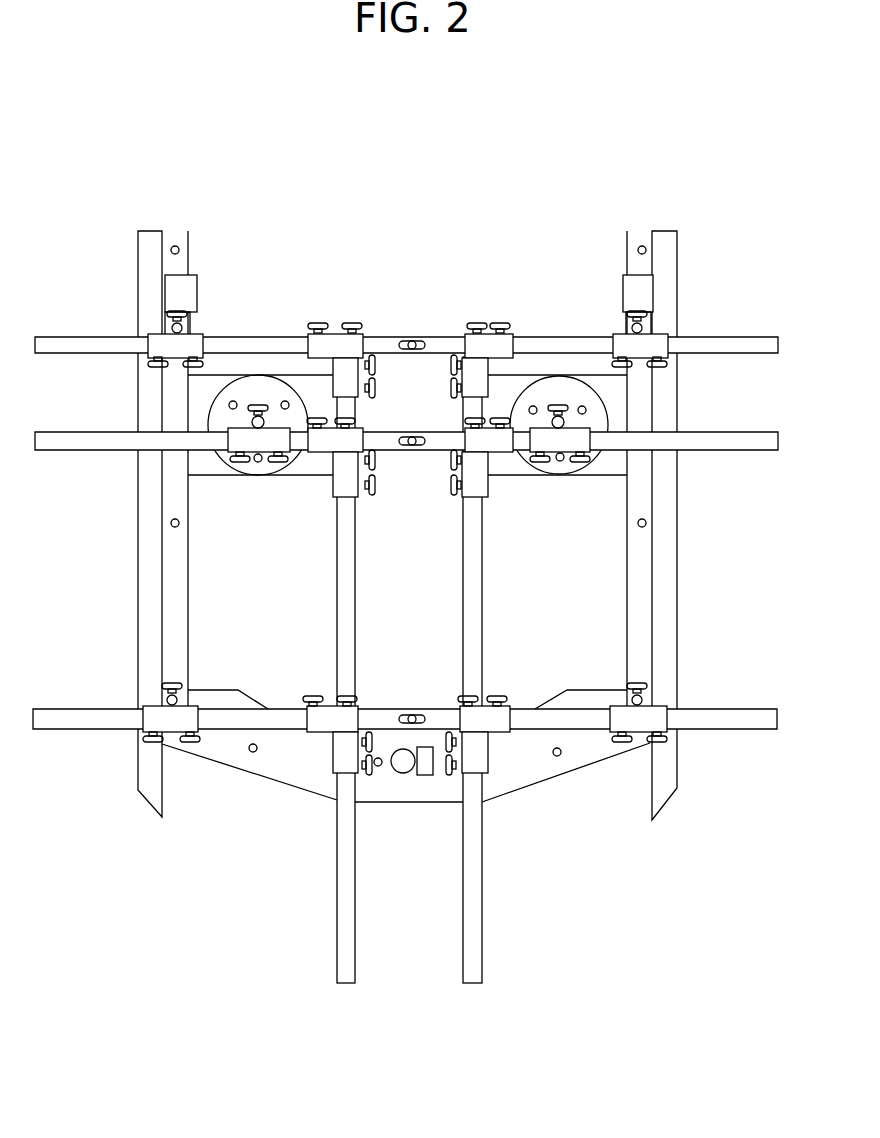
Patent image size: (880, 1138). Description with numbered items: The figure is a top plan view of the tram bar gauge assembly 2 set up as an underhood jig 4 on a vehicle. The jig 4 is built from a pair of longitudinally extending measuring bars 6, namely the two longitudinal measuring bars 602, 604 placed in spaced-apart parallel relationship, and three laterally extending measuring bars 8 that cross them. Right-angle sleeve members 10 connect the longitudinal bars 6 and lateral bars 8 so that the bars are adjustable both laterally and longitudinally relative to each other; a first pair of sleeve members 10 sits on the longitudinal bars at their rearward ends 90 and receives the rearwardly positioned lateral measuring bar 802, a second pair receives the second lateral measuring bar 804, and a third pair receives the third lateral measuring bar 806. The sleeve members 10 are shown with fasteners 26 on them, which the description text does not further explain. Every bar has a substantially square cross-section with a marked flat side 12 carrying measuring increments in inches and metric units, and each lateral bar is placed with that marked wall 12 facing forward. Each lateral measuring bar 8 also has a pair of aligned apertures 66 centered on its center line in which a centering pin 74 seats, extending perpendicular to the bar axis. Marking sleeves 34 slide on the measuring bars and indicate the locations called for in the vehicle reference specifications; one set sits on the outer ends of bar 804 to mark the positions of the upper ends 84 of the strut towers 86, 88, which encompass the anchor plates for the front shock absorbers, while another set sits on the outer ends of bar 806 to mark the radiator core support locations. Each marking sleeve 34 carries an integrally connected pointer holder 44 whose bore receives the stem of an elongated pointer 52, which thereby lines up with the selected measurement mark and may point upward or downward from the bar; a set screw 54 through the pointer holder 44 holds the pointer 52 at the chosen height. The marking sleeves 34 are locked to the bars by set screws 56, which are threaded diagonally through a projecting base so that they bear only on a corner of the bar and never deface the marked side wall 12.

The tram bar gauge assembly 2 is at (407, 470).
The adjustable frame or jig 4 is at (351, 312).
The longitudinally extending measuring bars 6 is at (410, 670).
The laterally extending measuring bars 8 is at (344, 566).
The right-angle sleeve members 10 is at (409, 538).
The marked flat side 12 is at (723, 557).
The wing nuts on tube clamps 26 is at (405, 550).
The marking sleeves 34 is at (452, 557).
The pointer holder 44 is at (360, 488).
The elongated pointer 52 is at (446, 487).
The set screw 54 is at (443, 658).
The set screws 56 is at (371, 584).
The aperture 66 is at (406, 728).
The centering pin 74 is at (424, 507).
The upper ends of strut towers 84 is at (408, 377).
The strut tower 86 is at (560, 495).
The strut tower 88 is at (259, 492).
The rearward ends 90 is at (408, 409).
The longitudinal measuring bar 602 is at (512, 670).
The longitudinal measuring bar 604 is at (306, 670).
The rearwardly positioned lateral measuring bar 802 is at (351, 312).
The second lateral measuring bar 804 is at (351, 472).
The third lateral measuring bar 806 is at (344, 743).